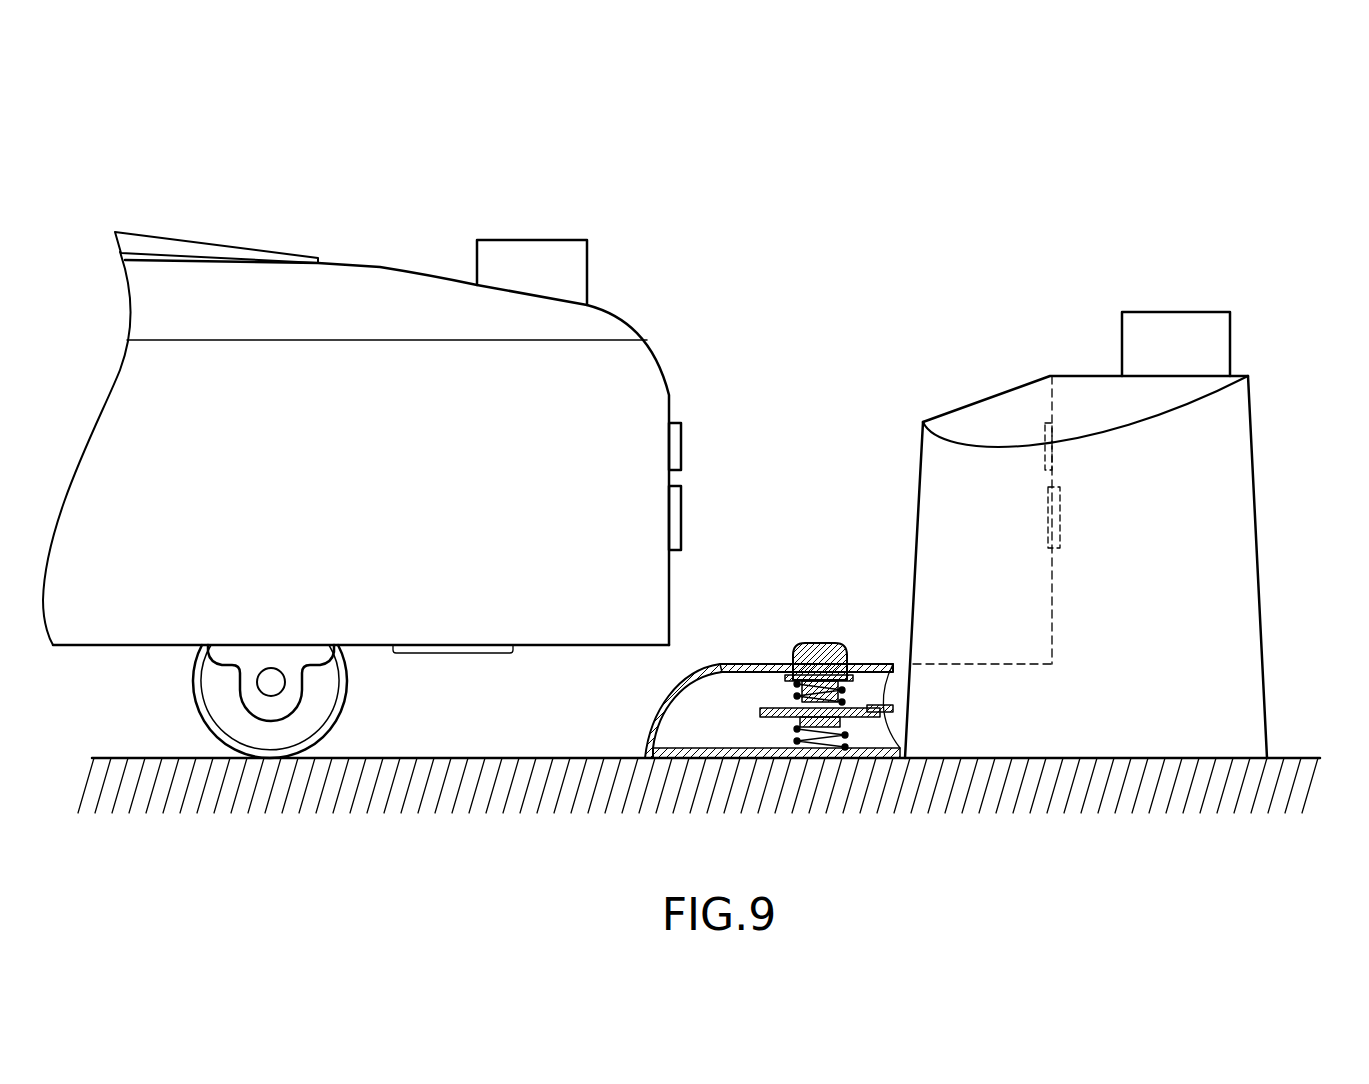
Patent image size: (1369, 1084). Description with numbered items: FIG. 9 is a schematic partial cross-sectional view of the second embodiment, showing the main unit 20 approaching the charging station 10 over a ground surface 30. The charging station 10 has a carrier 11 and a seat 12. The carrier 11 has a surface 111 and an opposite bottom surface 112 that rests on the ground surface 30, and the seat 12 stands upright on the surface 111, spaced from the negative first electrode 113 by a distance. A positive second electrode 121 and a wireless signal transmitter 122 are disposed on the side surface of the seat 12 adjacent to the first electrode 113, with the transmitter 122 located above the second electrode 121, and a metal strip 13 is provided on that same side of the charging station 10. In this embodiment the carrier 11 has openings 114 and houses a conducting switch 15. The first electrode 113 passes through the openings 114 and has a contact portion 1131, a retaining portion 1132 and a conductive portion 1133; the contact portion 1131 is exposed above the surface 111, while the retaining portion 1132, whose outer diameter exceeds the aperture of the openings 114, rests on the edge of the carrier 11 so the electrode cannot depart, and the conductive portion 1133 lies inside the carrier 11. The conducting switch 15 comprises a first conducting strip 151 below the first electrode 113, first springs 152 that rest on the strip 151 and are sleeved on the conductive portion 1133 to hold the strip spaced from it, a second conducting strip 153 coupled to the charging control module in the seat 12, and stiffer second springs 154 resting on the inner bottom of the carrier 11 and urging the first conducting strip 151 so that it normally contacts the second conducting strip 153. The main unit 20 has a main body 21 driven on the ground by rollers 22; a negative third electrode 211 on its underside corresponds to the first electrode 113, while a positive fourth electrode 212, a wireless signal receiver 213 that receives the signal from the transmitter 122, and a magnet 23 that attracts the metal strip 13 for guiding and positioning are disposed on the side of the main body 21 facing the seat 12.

The charging station 10 is at (1283, 358).
The carrier 11 is at (706, 722).
The surface 111 is at (712, 652).
The bottom surface 112 is at (783, 762).
The first electrode 113 is at (685, 592).
The contact portion 1131 is at (833, 647).
The retaining portion 1132 is at (788, 673).
The conductive portion 1133 is at (802, 698).
The openings 114 is at (832, 649).
The seat 12 is at (1254, 597).
The second electrode 121 is at (1055, 527).
The wireless signal transmitter 122 is at (1194, 317).
The metal strip 13 is at (1055, 430).
The conducting switch 15 is at (864, 693).
The first conducting strip 151 is at (885, 733).
The first springs 152 is at (800, 700).
The second conducting strip 153 is at (883, 707).
The second springs 154 is at (825, 745).
The main unit 20 is at (222, 233).
The main body 21 is at (112, 623).
The third electrode 211 is at (458, 650).
The fourth electrode 212 is at (678, 518).
The wireless signal receiver 213 is at (531, 247).
The rollers 22 is at (220, 688).
The magnet 23 is at (678, 447).
The ground 30 is at (1296, 758).